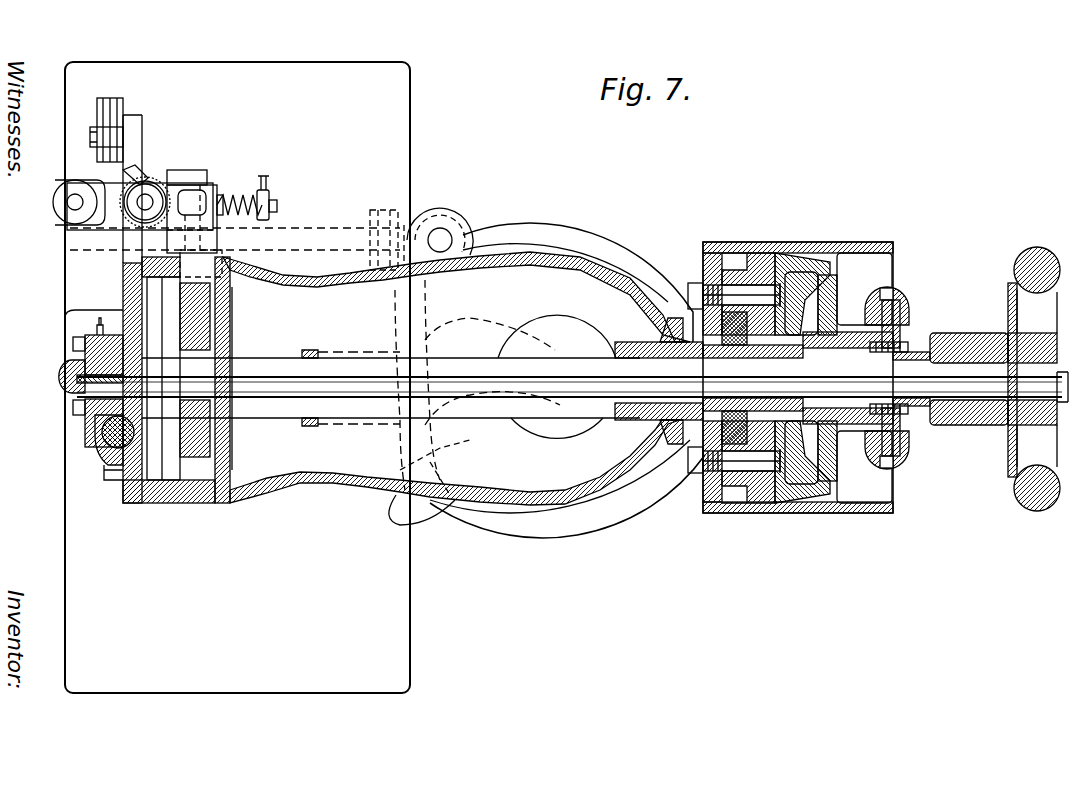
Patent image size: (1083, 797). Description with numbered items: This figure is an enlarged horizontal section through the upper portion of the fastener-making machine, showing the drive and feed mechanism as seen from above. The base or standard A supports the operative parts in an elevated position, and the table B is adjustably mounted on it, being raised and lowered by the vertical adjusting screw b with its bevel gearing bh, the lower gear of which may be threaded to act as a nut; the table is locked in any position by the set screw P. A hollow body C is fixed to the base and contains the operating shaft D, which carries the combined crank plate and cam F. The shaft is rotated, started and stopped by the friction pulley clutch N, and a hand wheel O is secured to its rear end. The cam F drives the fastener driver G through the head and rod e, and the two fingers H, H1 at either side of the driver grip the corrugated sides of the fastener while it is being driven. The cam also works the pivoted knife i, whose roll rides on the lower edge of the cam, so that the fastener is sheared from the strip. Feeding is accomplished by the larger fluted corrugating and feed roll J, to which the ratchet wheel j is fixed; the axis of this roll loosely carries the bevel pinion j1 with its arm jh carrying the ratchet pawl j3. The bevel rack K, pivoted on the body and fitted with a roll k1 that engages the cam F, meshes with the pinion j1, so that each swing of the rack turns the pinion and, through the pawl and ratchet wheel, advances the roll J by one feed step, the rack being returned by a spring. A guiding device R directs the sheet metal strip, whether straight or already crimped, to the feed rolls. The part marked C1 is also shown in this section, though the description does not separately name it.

The table B is at (237, 377).
The combined crank plate and cam F is at (175, 488).
The roll k1 is at (200, 267).
The base or standard A is at (640, 258).
The hollow body C is at (535, 505).
The operating shaft D is at (535, 358).
The set screw P is at (410, 520).
The vertical adjusting screw b is at (450, 238).
The bevel gearing bh is at (428, 215).
The friction pulley clutch N is at (792, 242).
The hand wheel O is at (1032, 250).
The fastener driver G is at (85, 355).
The finger H is at (68, 383).
The finger H1 is at (73, 410).
The rod e is at (100, 438).
The pivoted knife i is at (97, 330).
The fluted corrugating and feed roll J is at (55, 212).
The bevel rack K is at (160, 182).
The ratchet wheel j is at (160, 180).
The bevel pinion j1 is at (140, 170).
The ratchet pawl j3 is at (207, 175).
The arm jh is at (205, 195).
The spring and screw C1 is at (233, 190).
The guiding device R is at (110, 120).